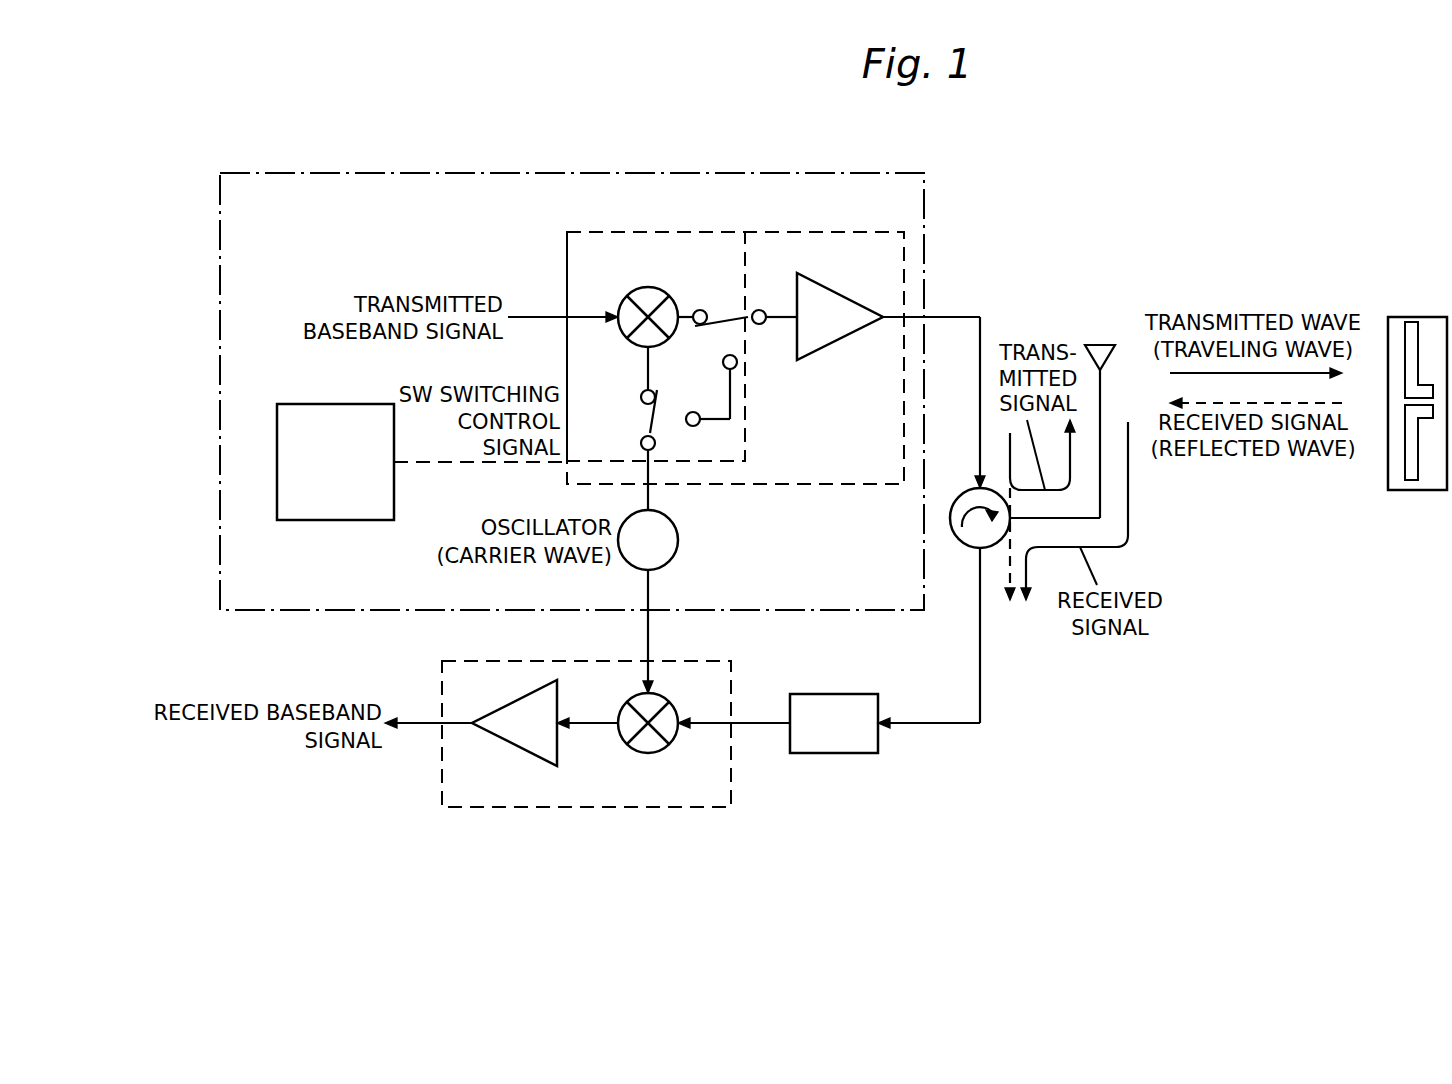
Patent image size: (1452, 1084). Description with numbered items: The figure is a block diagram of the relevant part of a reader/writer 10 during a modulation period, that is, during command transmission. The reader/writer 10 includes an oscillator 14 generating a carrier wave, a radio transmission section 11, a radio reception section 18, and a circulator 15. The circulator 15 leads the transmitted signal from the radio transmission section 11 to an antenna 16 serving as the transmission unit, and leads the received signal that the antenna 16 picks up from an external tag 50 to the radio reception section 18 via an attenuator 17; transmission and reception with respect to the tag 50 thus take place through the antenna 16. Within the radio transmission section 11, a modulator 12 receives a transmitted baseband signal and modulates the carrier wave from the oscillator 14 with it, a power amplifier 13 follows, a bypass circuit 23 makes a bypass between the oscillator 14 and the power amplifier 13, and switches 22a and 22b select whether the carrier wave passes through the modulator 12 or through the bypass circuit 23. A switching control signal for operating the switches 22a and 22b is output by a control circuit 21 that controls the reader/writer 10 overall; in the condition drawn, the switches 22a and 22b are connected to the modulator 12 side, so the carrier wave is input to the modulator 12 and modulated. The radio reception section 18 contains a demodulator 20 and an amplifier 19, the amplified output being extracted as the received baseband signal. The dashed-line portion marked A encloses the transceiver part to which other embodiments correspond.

The reader/writer 10 is at (572, 338).
The reference A portion A is at (330, 173).
The radio transmission section 11 is at (820, 233).
The modulator 12 is at (640, 289).
The power amplifier 13 is at (833, 285).
The oscillator 14 is at (678, 537).
The circulator 15 is at (972, 492).
The antenna 16 is at (1108, 340).
The attenuator 17 is at (830, 753).
The radio reception section 18 is at (637, 807).
The amplifier 19 is at (508, 745).
The demodulator 20 is at (655, 750).
The control circuit 21 is at (333, 520).
The switch 22a is at (645, 420).
The switch 22b is at (713, 306).
The bypass circuit 23 is at (733, 400).
The tag 50 is at (1418, 490).